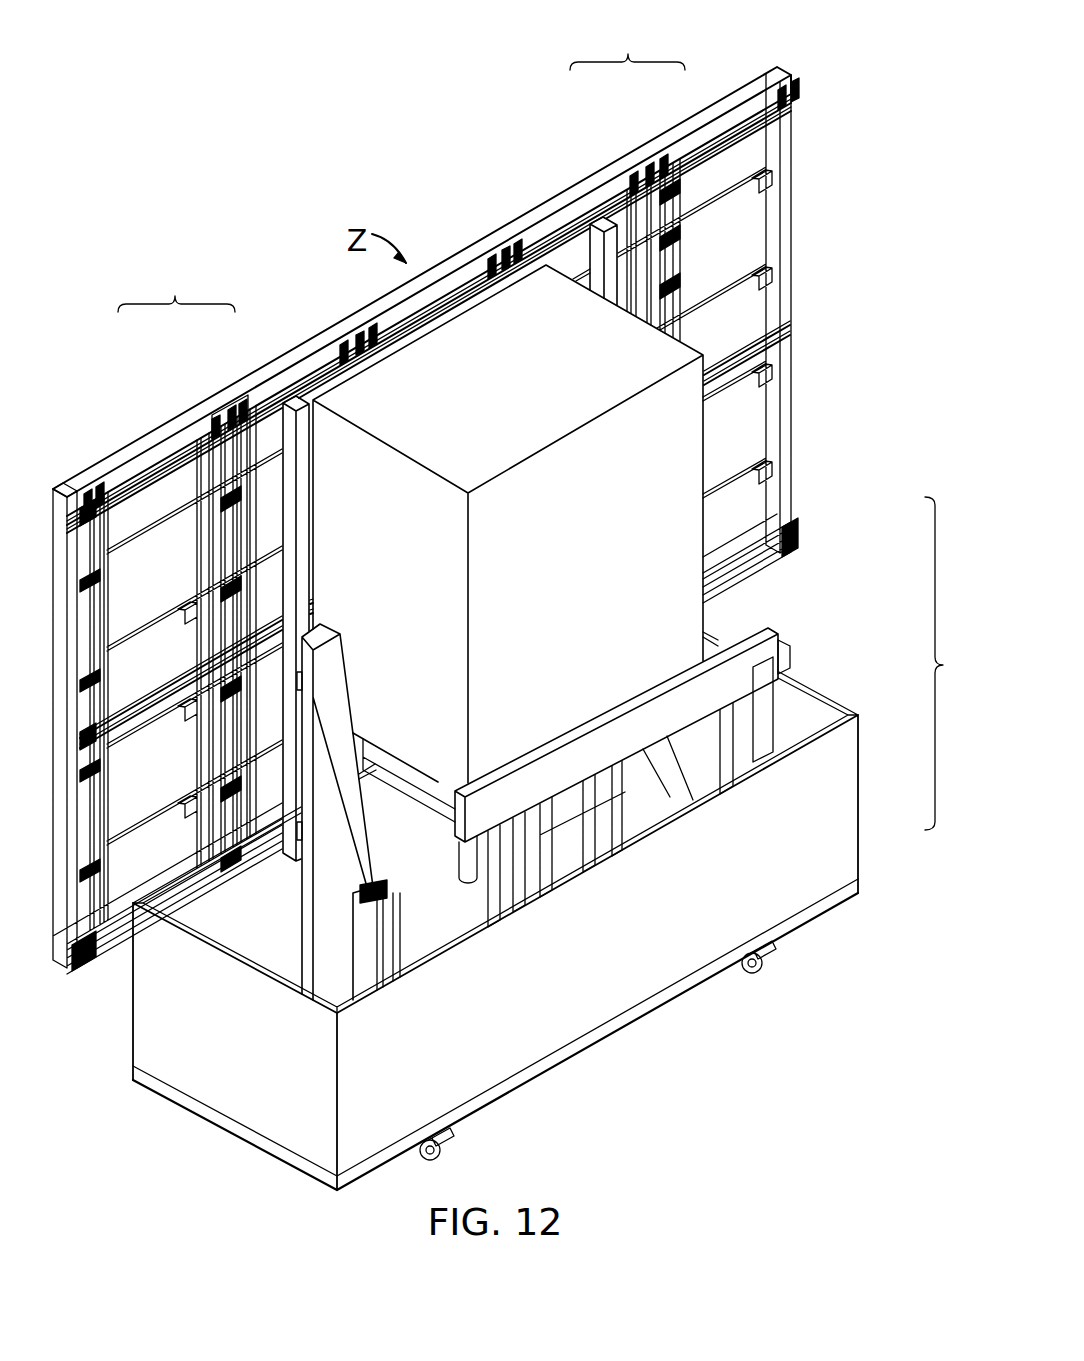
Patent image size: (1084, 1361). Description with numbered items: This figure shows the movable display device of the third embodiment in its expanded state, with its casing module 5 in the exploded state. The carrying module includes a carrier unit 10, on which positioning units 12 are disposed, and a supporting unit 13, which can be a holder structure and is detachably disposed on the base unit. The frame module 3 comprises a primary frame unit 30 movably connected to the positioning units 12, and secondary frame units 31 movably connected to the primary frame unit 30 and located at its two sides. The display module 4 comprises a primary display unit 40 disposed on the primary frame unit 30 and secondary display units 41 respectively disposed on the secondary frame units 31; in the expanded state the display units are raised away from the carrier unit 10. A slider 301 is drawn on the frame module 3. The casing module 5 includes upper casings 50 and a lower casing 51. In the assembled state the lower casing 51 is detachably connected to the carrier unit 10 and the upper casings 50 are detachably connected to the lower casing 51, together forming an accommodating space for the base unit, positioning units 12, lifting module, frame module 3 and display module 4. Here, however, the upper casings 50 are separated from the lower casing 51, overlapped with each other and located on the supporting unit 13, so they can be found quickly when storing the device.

The frame module 3 is at (627, 46).
The primary frame unit 30 is at (617, 203).
The secondary frame unit 31 is at (695, 158).
The slider 301 is at (597, 267).
The display module 4 is at (176, 290).
The primary display unit 40 is at (233, 381).
The secondary display unit 41 is at (741, 90).
The casing module 5 is at (946, 663).
The upper casing 50 is at (692, 534).
The lower casing 51 is at (852, 829).
The carrier unit 10 is at (238, 1127).
The positioning unit 12 is at (348, 862).
The supporting unit 13 is at (524, 775).